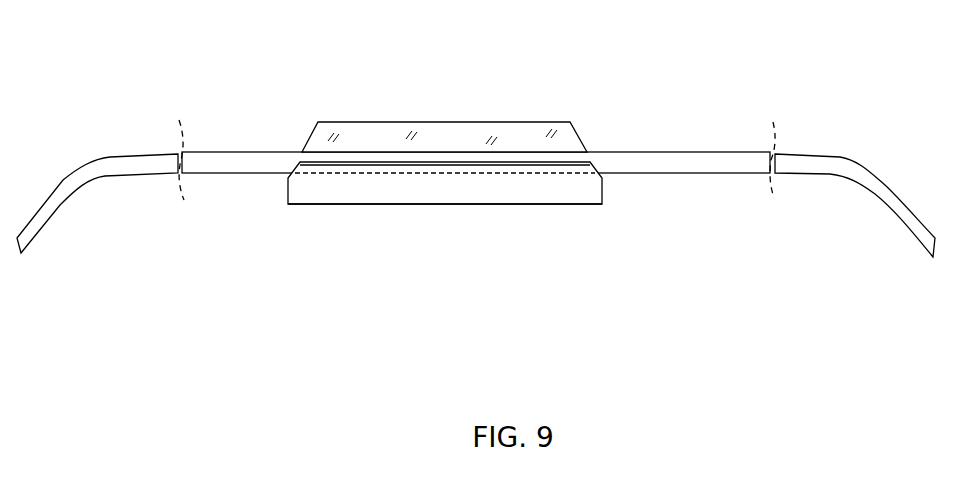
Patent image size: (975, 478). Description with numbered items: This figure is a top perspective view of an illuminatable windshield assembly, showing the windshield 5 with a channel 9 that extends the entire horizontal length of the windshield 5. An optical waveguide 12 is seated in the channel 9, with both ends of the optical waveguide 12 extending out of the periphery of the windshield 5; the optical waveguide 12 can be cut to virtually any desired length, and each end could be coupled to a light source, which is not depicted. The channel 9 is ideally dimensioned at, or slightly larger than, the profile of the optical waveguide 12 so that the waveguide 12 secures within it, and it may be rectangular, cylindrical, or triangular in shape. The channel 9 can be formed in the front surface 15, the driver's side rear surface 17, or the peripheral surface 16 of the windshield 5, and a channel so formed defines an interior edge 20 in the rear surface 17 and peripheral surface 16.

The windshield 5 is at (484, 144).
The channel 9 is at (523, 172).
The optical waveguide 12 is at (476, 272).
The front surface 15 is at (441, 213).
The peripheral surface 16 is at (504, 220).
The driver's side rear surface 17 is at (368, 133).
The interior edge 20 is at (476, 135).